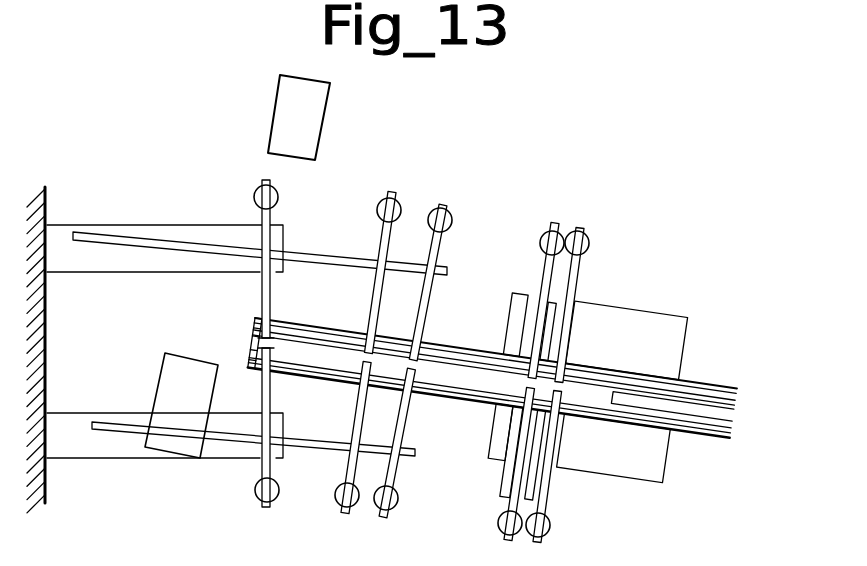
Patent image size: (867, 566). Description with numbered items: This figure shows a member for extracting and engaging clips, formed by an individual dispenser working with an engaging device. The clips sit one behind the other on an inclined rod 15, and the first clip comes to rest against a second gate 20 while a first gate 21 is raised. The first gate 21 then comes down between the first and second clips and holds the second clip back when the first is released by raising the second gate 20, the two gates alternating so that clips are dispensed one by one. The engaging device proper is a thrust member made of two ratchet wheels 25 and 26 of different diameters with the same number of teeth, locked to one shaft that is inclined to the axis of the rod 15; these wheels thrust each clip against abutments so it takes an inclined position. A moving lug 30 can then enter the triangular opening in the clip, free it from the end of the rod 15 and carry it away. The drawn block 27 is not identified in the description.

The inclined rod 15 is at (469, 356).
The second gate 20 is at (525, 296).
The first gate 21 is at (566, 290).
The ratchet wheel 25 is at (138, 198).
The ratchet wheel 26 is at (138, 428).
The block 27 is at (287, 95).
The lug 30 is at (185, 372).